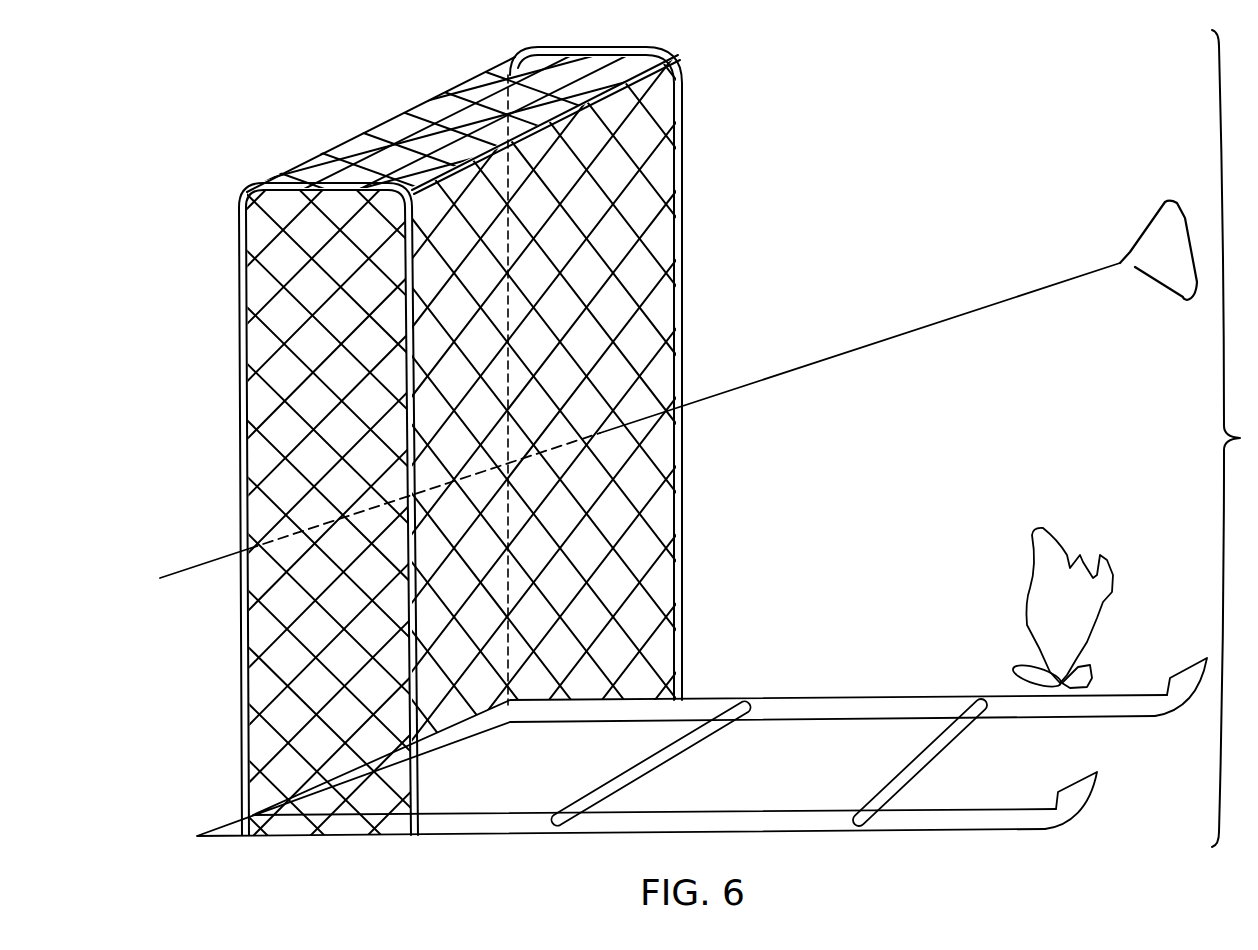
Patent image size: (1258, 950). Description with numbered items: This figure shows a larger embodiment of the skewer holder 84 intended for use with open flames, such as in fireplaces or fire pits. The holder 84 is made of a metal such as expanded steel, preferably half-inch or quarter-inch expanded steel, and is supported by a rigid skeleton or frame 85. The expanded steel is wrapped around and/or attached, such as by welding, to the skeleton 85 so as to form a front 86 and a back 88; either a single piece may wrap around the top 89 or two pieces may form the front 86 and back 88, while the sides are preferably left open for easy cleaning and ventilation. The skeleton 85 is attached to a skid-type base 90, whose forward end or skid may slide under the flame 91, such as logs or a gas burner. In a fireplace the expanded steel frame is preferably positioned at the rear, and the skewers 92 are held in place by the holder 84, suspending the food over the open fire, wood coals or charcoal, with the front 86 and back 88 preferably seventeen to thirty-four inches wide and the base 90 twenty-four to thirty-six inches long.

The holder 84 is at (675, 305).
The frame 85 is at (683, 190).
The front 86 is at (560, 528).
The back 88 is at (290, 438).
The top net panel 89 is at (458, 114).
The skid-type base 90 is at (970, 693).
The ember 91 is at (1112, 597).
The skewers 92 is at (1020, 285).